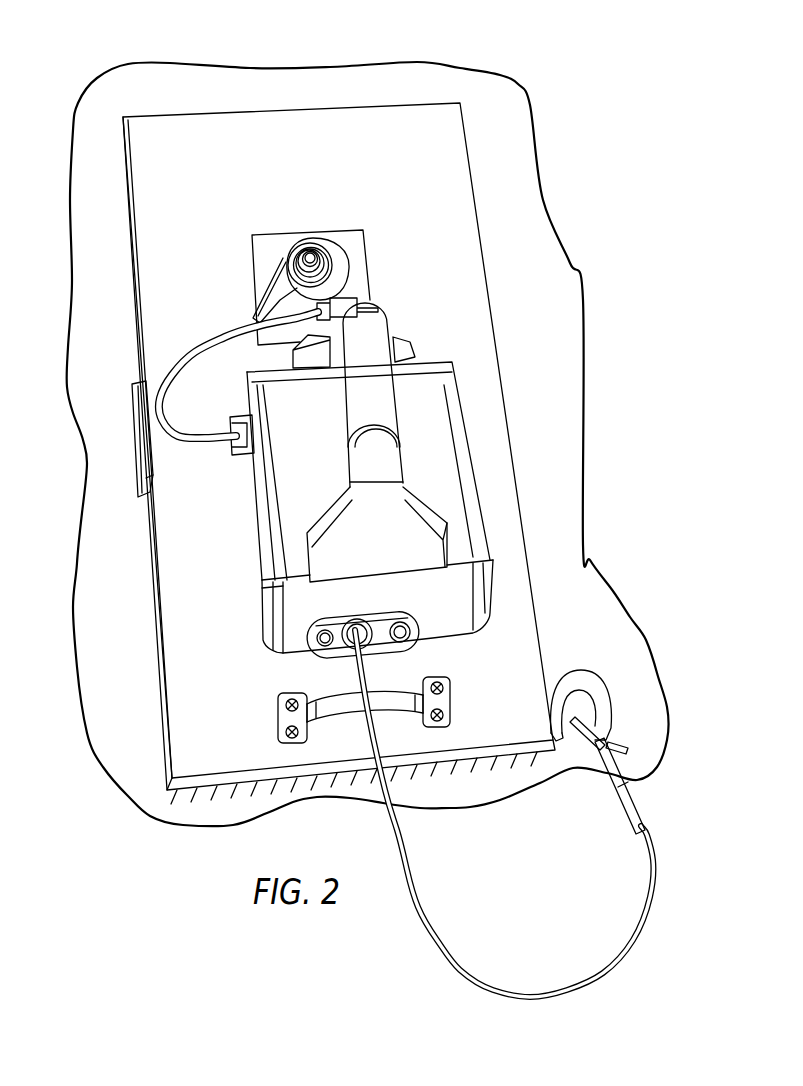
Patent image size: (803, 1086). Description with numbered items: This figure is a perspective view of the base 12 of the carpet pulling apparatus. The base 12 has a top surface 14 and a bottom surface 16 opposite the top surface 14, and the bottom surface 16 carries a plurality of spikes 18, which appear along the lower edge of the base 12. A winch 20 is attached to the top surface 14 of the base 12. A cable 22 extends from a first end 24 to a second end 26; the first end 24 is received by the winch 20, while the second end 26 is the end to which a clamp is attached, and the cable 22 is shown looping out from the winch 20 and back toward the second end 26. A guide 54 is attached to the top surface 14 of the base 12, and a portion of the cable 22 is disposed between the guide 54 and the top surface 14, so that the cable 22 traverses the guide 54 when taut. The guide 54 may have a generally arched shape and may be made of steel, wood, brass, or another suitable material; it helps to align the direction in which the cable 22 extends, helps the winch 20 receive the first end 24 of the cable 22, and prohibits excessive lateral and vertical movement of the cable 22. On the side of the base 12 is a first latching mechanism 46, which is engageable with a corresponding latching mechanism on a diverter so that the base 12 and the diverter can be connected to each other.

The base 12 is at (447, 157).
The top surface 14 is at (433, 123).
The bottom surface 16 is at (122, 132).
The spikes 18 is at (437, 769).
The winch 20 is at (443, 450).
The cable 22 is at (455, 980).
The first end 24 is at (395, 650).
The second end 26 is at (650, 826).
The first latching mechanism 46 is at (130, 426).
The guide 54 is at (347, 714).